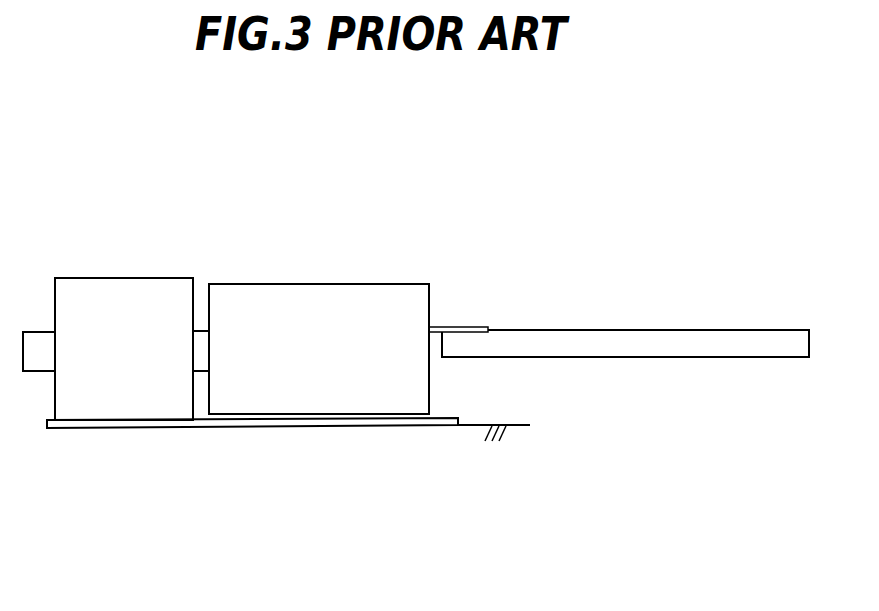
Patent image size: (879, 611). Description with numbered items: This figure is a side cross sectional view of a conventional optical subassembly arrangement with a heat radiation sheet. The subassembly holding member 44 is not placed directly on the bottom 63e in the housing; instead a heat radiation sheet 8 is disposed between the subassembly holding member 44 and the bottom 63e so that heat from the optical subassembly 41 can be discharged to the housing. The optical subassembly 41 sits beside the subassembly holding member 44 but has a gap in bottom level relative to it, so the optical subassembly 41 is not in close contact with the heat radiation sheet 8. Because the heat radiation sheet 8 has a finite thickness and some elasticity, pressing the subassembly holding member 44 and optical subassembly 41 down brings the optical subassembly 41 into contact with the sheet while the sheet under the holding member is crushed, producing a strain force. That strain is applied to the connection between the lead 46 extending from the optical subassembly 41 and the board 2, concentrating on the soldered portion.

The subassembly holding member 44 is at (120, 278).
The optical subassembly 41 is at (303, 284).
The lead 46 is at (463, 327).
The board 2 is at (660, 328).
The heat radiation sheet 8 is at (365, 428).
The bottom 63e is at (512, 424).